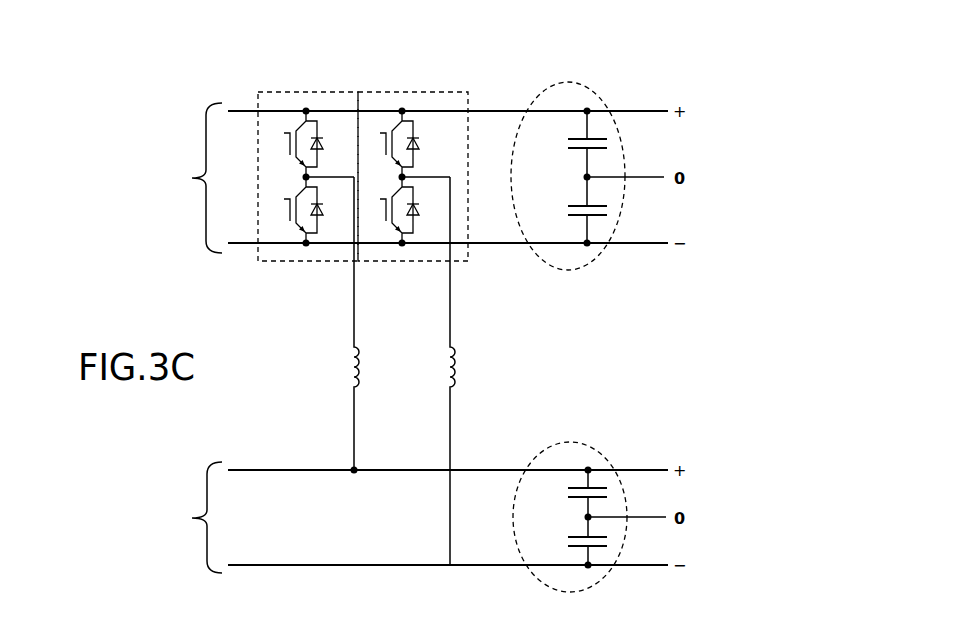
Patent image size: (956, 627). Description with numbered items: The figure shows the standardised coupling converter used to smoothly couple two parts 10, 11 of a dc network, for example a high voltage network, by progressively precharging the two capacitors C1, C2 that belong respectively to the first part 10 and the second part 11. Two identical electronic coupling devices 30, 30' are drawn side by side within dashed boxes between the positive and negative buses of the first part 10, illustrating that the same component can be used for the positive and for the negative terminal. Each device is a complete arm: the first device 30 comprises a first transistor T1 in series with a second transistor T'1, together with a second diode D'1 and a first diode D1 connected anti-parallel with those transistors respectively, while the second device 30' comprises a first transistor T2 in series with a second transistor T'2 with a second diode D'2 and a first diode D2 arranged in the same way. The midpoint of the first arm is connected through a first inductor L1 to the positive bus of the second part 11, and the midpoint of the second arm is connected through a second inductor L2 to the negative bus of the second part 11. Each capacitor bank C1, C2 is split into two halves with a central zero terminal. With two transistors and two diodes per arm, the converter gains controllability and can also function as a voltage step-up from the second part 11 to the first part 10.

The first part of the dc network 10 is at (194, 178).
The second part of the dc network 11 is at (195, 517).
The electronic coupling device 30 is at (308, 154).
The electronic coupling device 30' is at (413, 154).
The first transistor T1 is at (291, 144).
The second transistor T'1 is at (290, 210).
The first transistor T2 is at (387, 144).
The second transistor T'2 is at (386, 210).
The second diode D'1 is at (330, 145).
The first diode D1 is at (328, 211).
The second diode D'2 is at (426, 145).
The first diode D2 is at (424, 211).
The first inductor L1 is at (342, 323).
The second inductor L2 is at (439, 371).
The first capacitor C1 is at (587, 172).
The second capacitor C2 is at (589, 512).